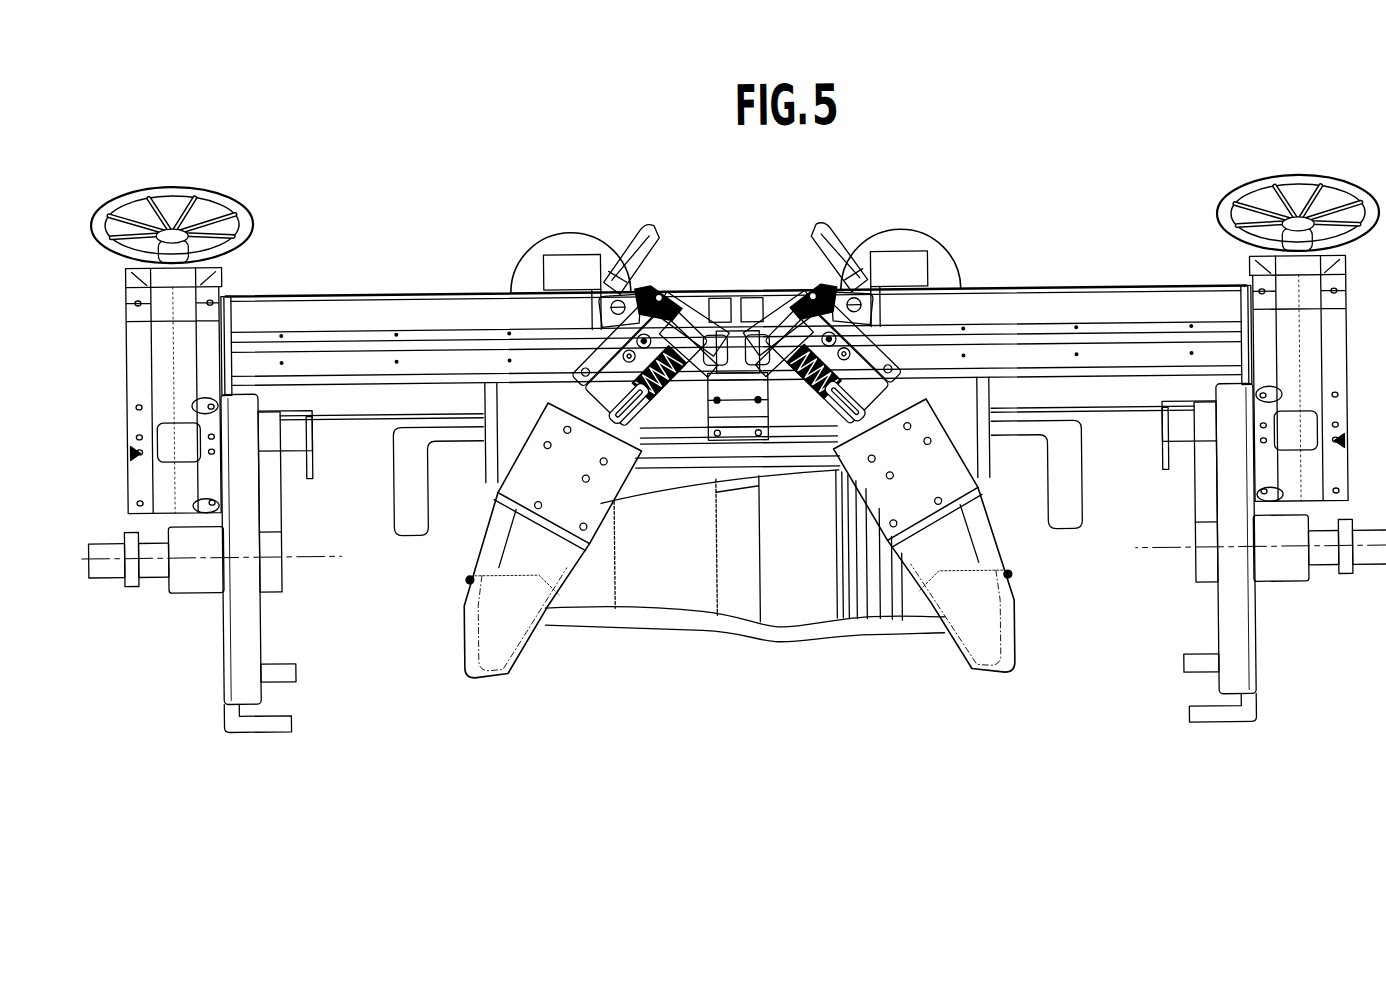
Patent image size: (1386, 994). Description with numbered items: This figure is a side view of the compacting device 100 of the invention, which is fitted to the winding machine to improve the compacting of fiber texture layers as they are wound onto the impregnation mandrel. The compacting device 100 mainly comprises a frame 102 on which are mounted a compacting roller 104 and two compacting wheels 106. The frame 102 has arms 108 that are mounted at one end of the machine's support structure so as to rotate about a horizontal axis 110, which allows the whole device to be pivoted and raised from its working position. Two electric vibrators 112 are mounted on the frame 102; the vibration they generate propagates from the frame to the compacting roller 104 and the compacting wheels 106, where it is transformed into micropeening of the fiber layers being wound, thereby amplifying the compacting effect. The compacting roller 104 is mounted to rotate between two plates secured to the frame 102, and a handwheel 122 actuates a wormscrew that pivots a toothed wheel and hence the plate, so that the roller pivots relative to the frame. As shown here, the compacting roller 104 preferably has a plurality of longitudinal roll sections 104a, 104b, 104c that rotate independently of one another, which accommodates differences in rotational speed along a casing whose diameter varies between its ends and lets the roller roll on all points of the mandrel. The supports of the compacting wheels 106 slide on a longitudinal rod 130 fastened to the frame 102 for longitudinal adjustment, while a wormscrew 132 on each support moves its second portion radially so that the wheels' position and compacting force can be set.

The compacting device 100 is at (1055, 256).
The frame 102 is at (1105, 418).
The compacting roller 104 is at (905, 698).
The longitudinal roll section 104a is at (590, 590).
The longitudinal roll section 104b is at (695, 592).
The longitudinal roll section 104c is at (757, 600).
The compacting wheels 106 is at (505, 660).
The arms 108 is at (225, 650).
The horizontal axis 110 is at (323, 551).
The electric vibrators 112 is at (567, 238).
The handwheel 122 is at (186, 191).
The longitudinal rod 130 is at (414, 306).
The wormscrew 132 is at (752, 297).